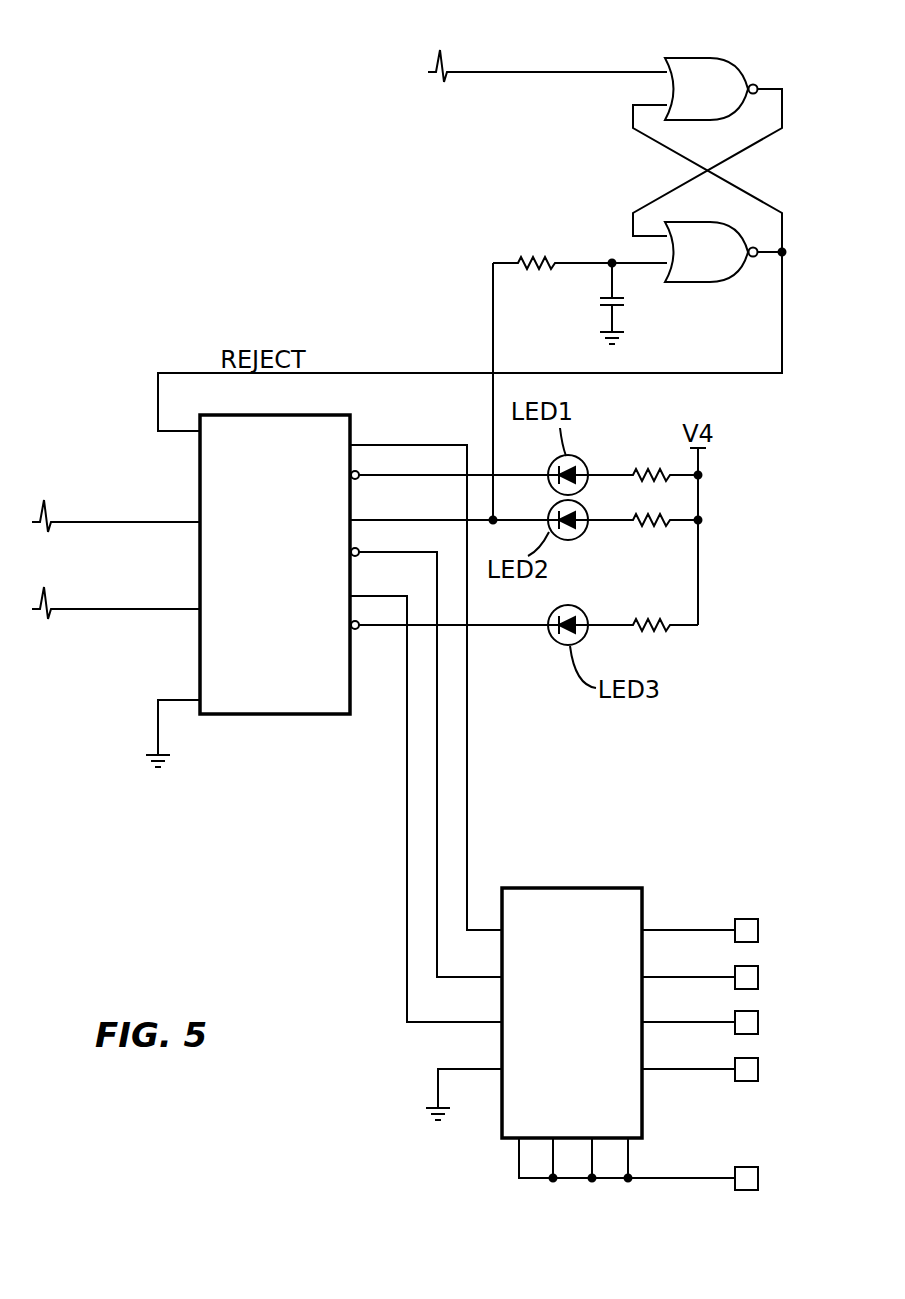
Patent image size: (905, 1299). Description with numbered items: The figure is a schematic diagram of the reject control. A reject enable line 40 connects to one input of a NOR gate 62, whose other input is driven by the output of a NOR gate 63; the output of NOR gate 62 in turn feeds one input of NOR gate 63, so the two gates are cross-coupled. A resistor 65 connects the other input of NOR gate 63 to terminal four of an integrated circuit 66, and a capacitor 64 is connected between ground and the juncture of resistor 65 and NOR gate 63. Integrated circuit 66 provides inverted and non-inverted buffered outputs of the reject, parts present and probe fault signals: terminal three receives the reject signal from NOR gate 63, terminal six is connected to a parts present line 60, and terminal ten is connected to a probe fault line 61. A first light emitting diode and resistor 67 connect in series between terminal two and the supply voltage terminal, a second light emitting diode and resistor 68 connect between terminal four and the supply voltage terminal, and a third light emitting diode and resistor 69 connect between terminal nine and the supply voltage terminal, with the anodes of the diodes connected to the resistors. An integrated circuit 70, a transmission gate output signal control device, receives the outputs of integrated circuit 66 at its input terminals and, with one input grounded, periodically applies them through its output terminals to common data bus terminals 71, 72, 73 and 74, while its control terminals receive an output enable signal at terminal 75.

The line 40 is at (503, 70).
The line 60 is at (66, 520).
The line 61 is at (180, 612).
The NOR gate 62 is at (730, 57).
The NOR gate 63 is at (712, 283).
The capacitor 64 is at (602, 312).
The resistor 65 is at (535, 262).
The integrated circuit 66 is at (305, 718).
The resistor 67 is at (652, 468).
The resistor 68 is at (640, 525).
The resistor 69 is at (650, 620).
The integrated circuit 70 is at (560, 885).
The common data bus terminal 71 is at (760, 930).
The common data bus terminal 72 is at (760, 975).
The common data bus terminal 73 is at (760, 1022).
The common data bus terminal 74 is at (755, 1082).
The terminal 75 is at (750, 1192).